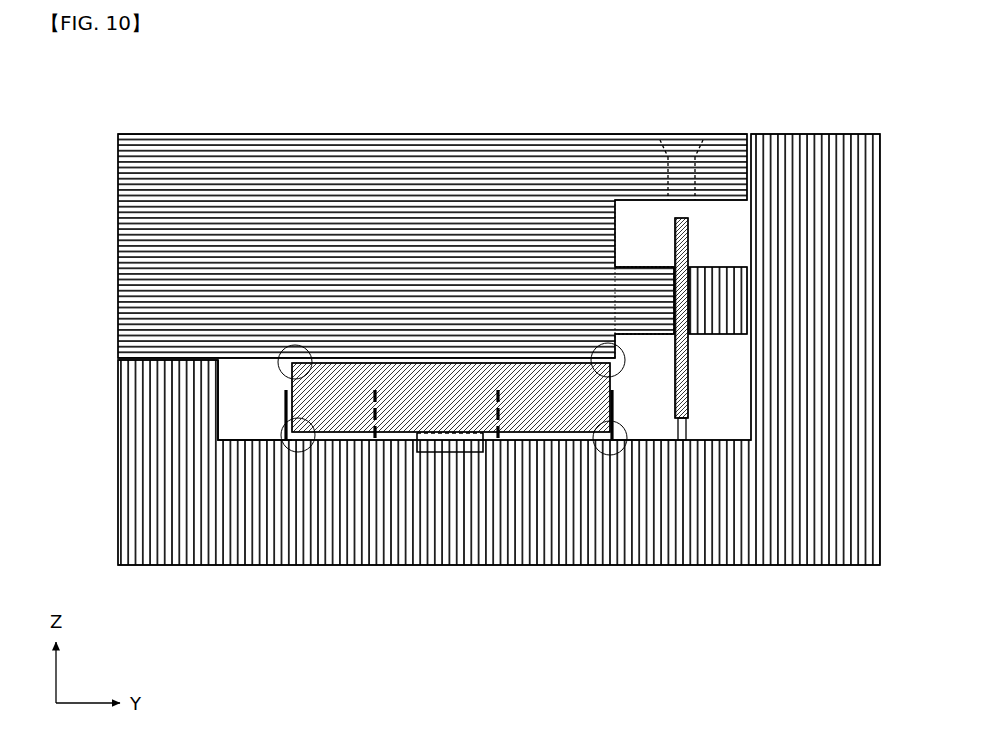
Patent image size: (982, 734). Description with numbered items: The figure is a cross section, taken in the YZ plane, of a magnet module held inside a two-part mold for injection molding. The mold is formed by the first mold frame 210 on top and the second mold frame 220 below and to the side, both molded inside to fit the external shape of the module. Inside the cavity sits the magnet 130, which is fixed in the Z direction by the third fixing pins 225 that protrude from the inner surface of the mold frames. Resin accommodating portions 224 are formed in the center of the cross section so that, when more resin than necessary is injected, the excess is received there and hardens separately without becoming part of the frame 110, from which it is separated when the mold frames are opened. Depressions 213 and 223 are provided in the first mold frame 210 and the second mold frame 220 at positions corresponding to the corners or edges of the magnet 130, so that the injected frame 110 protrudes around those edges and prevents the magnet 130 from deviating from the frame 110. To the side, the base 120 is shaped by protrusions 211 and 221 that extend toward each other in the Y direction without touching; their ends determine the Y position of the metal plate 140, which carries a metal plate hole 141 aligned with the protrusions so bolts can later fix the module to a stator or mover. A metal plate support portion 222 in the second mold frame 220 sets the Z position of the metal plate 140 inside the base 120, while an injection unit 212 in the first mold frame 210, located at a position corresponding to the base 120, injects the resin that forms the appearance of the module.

The frame 110 is at (253, 397).
The base 120 is at (643, 387).
The magnet 130 is at (452, 390).
The metal plate 140 is at (675, 375).
The metal plate hole 141 is at (675, 297).
The first mold frame 210 is at (190, 150).
The protrusion 211 is at (645, 287).
The injection unit 212 is at (677, 153).
The depression 213 is at (593, 350).
The second mold frame 220 is at (815, 172).
The protrusion 221 is at (713, 312).
The metal plate support portion 222 is at (677, 442).
The depression 223 is at (600, 442).
The resin accommodating portion 224 is at (468, 448).
The third fixing pin 225 is at (608, 407).